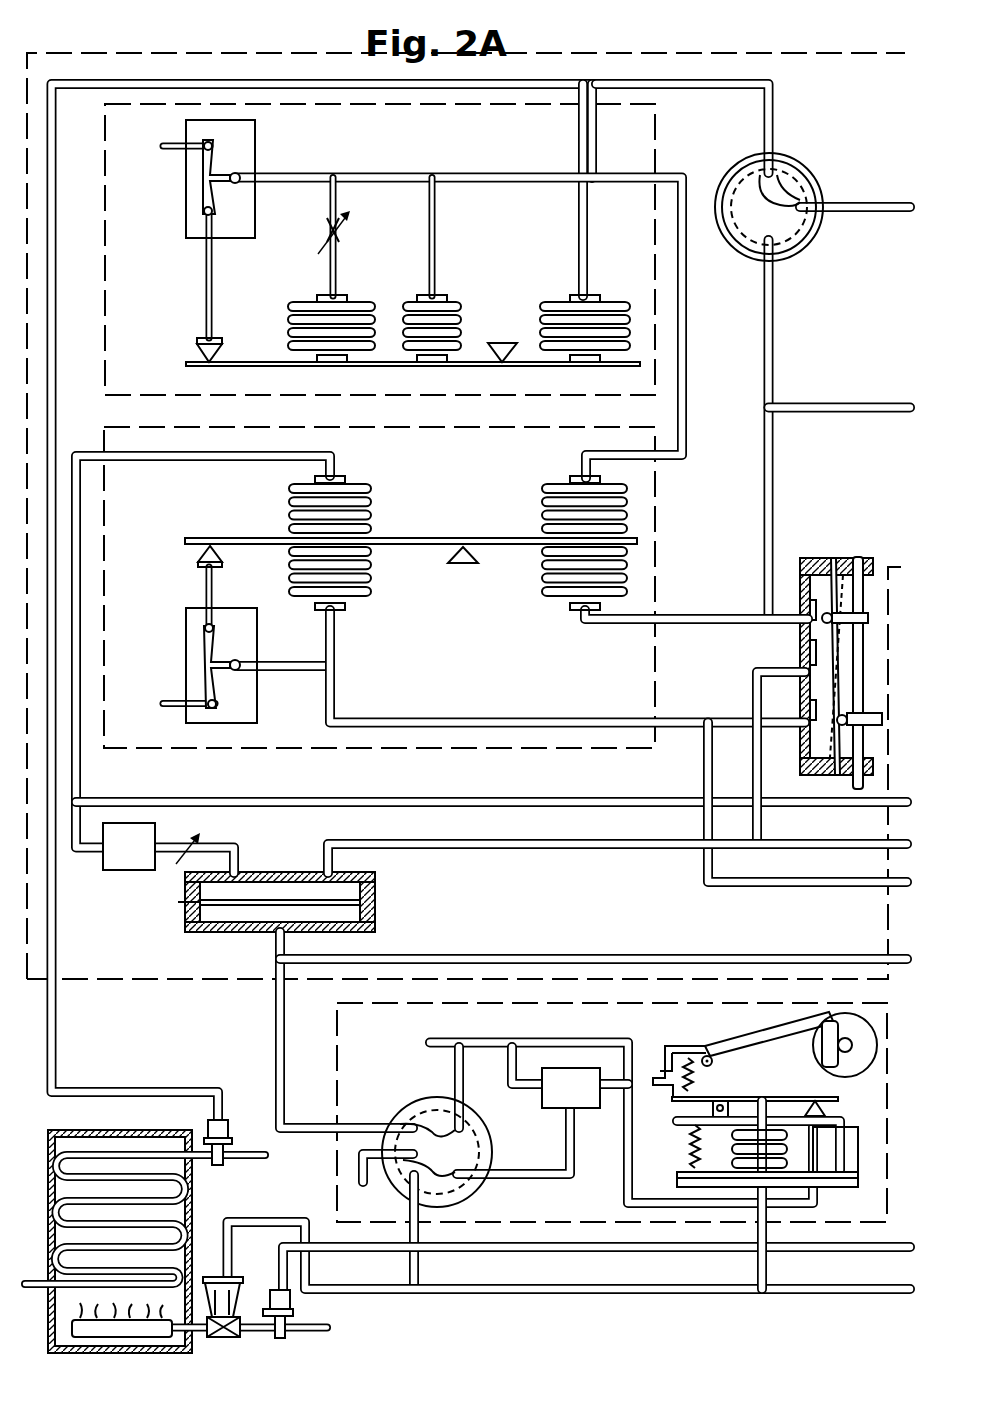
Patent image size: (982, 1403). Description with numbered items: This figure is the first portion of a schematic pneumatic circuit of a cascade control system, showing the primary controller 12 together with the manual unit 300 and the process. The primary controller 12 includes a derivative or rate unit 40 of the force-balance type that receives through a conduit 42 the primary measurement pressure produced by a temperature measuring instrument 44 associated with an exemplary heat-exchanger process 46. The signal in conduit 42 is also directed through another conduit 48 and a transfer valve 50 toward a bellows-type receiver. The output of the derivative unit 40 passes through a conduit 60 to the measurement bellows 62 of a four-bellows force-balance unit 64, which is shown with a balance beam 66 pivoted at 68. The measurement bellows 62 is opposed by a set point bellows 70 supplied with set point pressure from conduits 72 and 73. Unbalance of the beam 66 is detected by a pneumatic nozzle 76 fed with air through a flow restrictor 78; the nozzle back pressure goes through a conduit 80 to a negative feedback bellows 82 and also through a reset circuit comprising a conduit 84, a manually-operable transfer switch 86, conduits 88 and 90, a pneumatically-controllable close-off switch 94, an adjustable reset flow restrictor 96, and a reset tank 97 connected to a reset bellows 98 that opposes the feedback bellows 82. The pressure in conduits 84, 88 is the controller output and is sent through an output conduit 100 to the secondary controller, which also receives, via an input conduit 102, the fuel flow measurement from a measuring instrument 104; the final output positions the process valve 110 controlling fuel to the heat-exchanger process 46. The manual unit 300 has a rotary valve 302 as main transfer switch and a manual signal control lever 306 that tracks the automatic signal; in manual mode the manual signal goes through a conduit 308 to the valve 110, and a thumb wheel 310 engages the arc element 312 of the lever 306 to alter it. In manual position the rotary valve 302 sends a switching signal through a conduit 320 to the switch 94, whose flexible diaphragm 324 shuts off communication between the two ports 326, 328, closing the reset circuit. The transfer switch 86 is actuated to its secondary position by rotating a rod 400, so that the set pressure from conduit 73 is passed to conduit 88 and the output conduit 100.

The primary controller 12 is at (306, 76).
The derivative unit 40 is at (105, 226).
The conduit 42 is at (506, 83).
The temperature measuring instrument 44 is at (230, 1130).
The heat-exchanger process 46 is at (78, 1130).
The conduit 48 is at (756, 83).
The transfer valve 50 is at (730, 176).
The conduit 60 is at (688, 346).
The measurement bellows 62 is at (562, 478).
The four-bellows pneumatic force-balance unit 64 is at (104, 440).
The balance beam 66 is at (422, 538).
The pivot 68 is at (462, 564).
The set point bellows 70 is at (560, 607).
The conduit 72 is at (645, 626).
The conduit 73 is at (870, 403).
The pneumatic nozzle 76 is at (197, 553).
The flow restrictor 78 is at (205, 660).
The conduit 80 is at (283, 672).
The negative feedback bellows 82 is at (362, 605).
The conduit 84 is at (438, 717).
The manually-operable transfer switch 86 is at (818, 557).
The conduit 88 is at (750, 690).
The conduit 90 is at (533, 849).
The close-off switch 94 is at (184, 915).
The adjustable reset flow restrictor 96 is at (200, 843).
The reset tank 97 is at (118, 848).
The reset bellows 98 is at (368, 478).
The output conduit 100 is at (853, 836).
The input conduit 102 is at (276, 1272).
The measuring instrument 104 is at (292, 1300).
The process valve 110 is at (216, 1276).
The manual unit 300 is at (540, 1031).
The rotary valve 302 is at (416, 1100).
The manual signal control lever 306 is at (757, 1034).
The conduit 308 is at (420, 1264).
The thumb wheel 310 is at (862, 1062).
The arc element 312 is at (822, 1060).
The conduit 320 is at (866, 955).
The flexible diaphragm 324 is at (236, 907).
The port 326 is at (238, 873).
The port 328 is at (314, 873).
The rod 400 is at (862, 592).